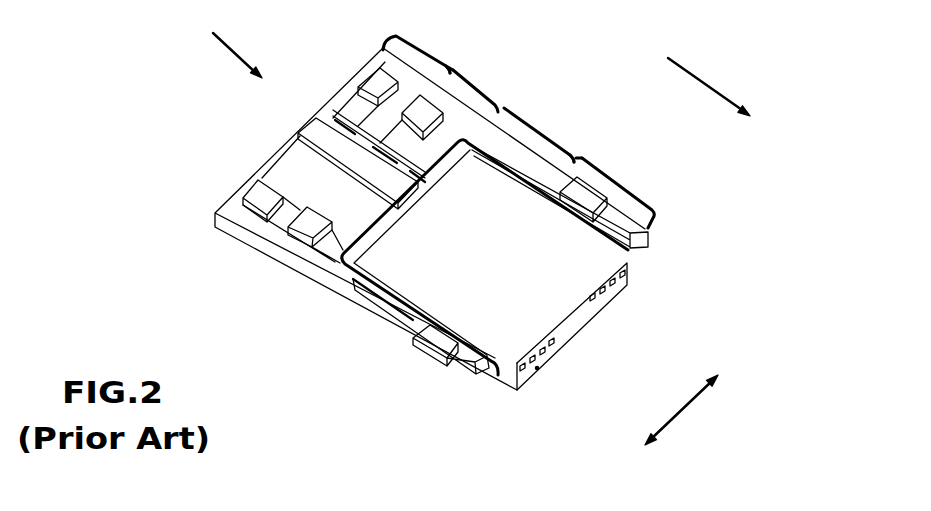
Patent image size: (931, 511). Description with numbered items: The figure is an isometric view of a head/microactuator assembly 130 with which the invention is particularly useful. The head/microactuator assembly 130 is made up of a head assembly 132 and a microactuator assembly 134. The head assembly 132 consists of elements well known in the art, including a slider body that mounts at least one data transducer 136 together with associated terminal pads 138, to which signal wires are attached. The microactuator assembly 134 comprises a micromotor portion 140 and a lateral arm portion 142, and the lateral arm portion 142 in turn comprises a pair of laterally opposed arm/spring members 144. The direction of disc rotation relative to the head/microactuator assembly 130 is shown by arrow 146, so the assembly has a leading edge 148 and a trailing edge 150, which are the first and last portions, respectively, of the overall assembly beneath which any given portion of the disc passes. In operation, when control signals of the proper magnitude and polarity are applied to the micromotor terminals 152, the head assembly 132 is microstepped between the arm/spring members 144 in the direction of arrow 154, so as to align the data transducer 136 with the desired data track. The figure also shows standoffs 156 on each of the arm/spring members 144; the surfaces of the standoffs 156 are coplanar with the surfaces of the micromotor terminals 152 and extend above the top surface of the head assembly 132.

The head/microactuator assembly 130 is at (216, 45).
The head assembly 132 is at (430, 253).
The microactuator assembly 134 is at (265, 233).
The data transducer 136 is at (537, 370).
The terminal pads 138 is at (627, 273).
The micromotor portion 140 is at (451, 66).
The lateral arm portion 142 is at (580, 158).
The arm/spring members 144 is at (633, 236).
The arrow 146 is at (707, 80).
The leading edge 148 is at (297, 132).
The trailing edge 150 is at (580, 330).
The micromotor terminals 152 is at (270, 193).
The arrow 154 is at (687, 408).
The standoffs 156 is at (583, 190).